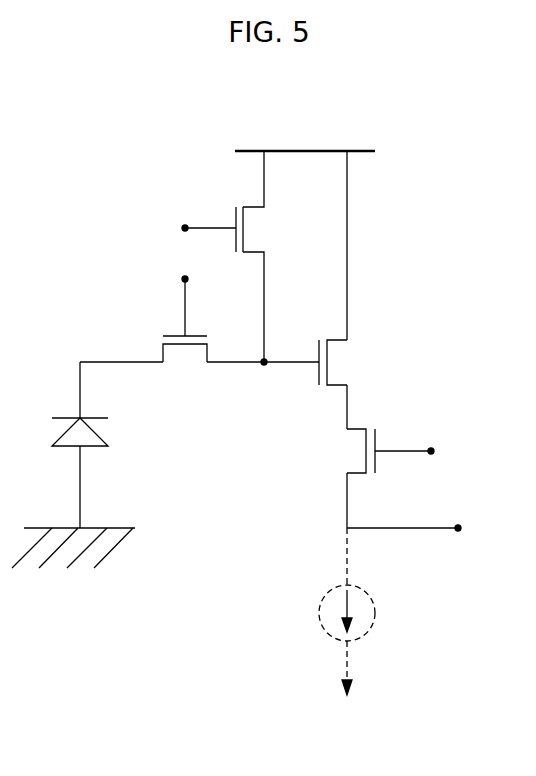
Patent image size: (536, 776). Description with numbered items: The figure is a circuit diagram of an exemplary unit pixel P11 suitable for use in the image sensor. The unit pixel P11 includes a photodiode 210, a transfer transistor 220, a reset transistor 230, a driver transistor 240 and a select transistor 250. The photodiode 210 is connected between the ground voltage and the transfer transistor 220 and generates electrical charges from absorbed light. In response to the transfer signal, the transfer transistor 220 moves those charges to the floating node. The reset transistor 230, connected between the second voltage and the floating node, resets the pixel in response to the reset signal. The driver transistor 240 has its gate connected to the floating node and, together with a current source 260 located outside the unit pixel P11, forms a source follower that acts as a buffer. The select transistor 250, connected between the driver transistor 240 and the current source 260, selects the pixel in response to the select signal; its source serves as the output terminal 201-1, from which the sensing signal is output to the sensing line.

The unit pixel P11 is at (426, 182).
The photodiode 210 is at (70, 434).
The transfer transistor 220 is at (163, 348).
The reset transistor 230 is at (253, 212).
The driver transistor 240 is at (340, 345).
The select transistor 250 is at (357, 432).
The current source 260 is at (322, 600).
The output terminal 201-1 is at (415, 528).